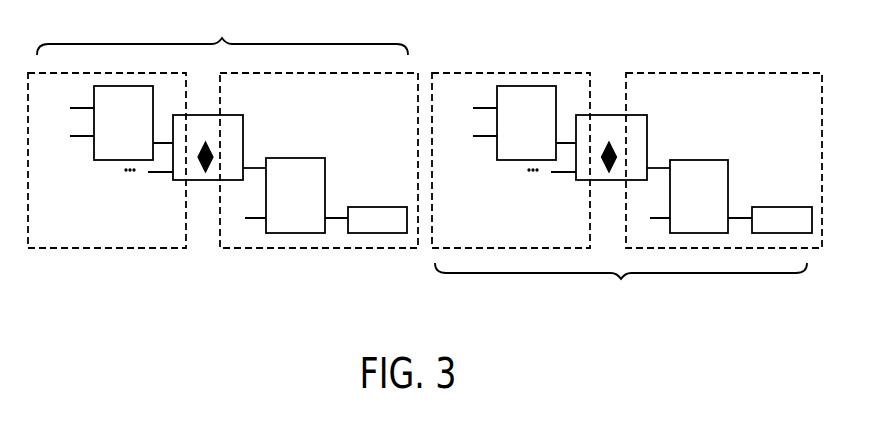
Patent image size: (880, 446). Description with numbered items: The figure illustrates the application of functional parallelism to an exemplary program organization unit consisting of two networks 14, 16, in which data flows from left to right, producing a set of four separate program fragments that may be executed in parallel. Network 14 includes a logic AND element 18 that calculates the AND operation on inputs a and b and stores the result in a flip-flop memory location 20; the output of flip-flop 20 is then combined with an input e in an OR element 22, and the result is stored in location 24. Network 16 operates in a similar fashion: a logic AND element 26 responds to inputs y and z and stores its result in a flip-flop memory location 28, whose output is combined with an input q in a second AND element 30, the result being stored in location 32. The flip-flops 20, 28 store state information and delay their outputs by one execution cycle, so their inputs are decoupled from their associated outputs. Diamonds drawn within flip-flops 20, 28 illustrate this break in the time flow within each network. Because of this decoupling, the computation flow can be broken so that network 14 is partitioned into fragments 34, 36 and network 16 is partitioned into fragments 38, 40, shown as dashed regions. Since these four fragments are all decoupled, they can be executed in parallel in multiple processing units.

The network 14 is at (222, 34).
The network 16 is at (621, 286).
The logic AND element 18 is at (117, 142).
The flip-flop memory location 20 is at (235, 125).
The OR element 22 is at (317, 175).
The location 24 is at (359, 226).
The logic AND element 26 is at (518, 152).
The flip-flop memory location 28 is at (638, 126).
The second AND element 30 is at (725, 160).
The location 32 is at (772, 212).
The fragment 34 is at (75, 252).
The fragment 36 is at (250, 250).
The fragment 38 is at (467, 72).
The fragment 40 is at (762, 70).